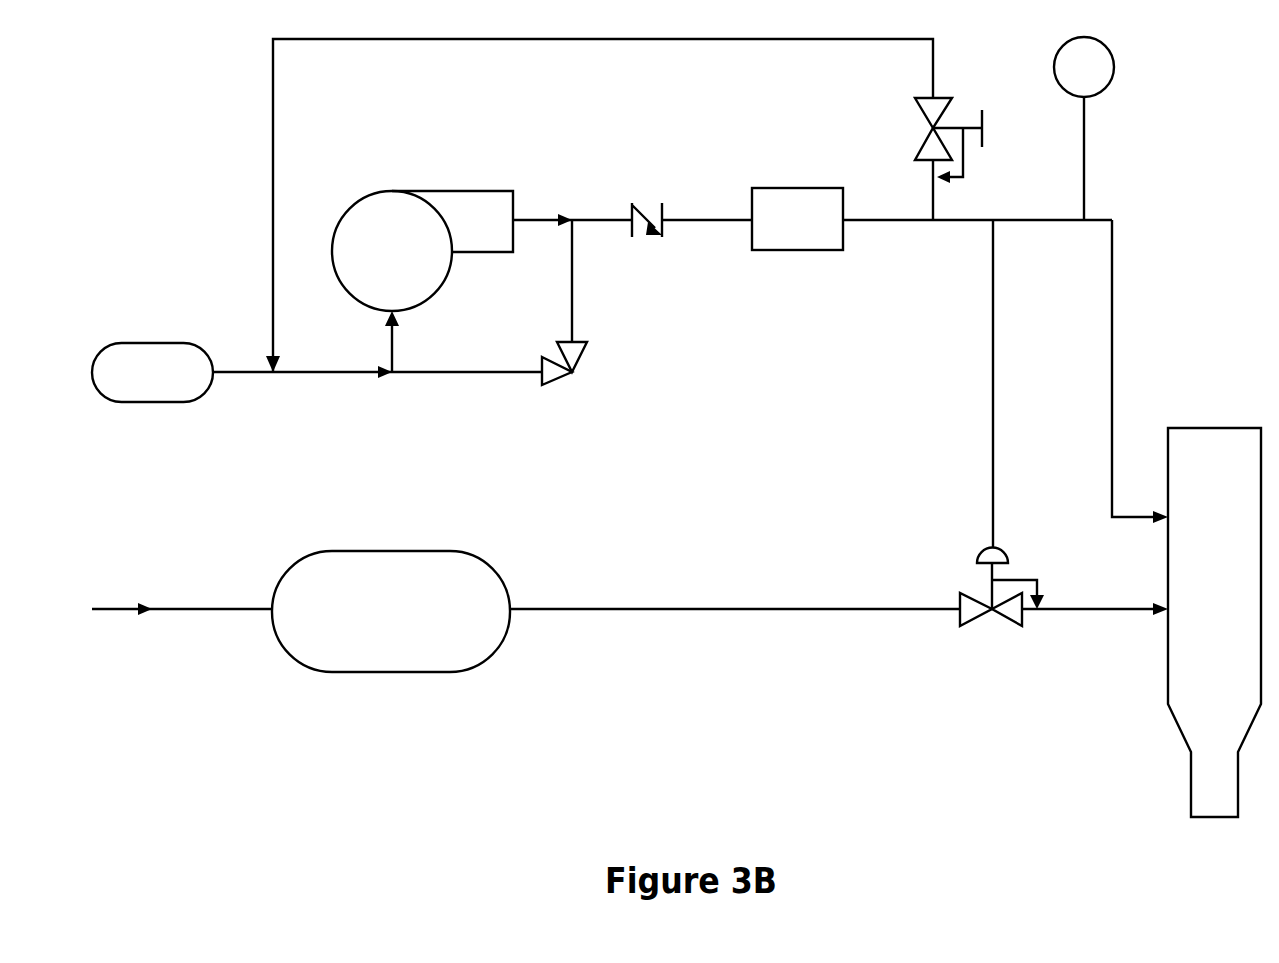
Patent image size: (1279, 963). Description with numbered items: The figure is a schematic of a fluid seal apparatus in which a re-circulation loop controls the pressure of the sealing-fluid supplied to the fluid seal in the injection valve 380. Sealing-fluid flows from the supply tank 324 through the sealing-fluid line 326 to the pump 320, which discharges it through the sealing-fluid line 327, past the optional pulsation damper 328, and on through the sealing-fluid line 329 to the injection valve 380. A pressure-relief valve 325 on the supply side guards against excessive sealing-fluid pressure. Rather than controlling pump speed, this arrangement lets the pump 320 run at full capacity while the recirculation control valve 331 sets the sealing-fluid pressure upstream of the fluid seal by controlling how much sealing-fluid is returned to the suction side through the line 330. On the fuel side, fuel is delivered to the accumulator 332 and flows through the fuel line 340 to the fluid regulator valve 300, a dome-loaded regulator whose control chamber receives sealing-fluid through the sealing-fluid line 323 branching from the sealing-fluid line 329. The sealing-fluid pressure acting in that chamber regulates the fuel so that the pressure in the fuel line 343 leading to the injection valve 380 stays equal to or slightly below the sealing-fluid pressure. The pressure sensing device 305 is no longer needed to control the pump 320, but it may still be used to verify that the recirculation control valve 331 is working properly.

The fluid regulator valve 300 is at (973, 595).
The pressure sensing device 305 is at (1084, 67).
The pump 320 is at (422, 251).
The sealing-fluid line 323 is at (992, 420).
The supply tank 324 is at (152, 372).
The pressure-relief valve 325 is at (548, 387).
The sealing-fluid line 326 is at (302, 372).
The sealing-fluid line 327 is at (693, 220).
The pulsation damper 328 is at (797, 219).
The sealing-fluid line 329 is at (1113, 271).
The line 330 is at (273, 160).
The recirculation control valve 331 is at (918, 100).
The accumulator 332 is at (391, 611).
The fuel line 340 is at (932, 607).
The fuel line 343 is at (1080, 610).
The injection valve 380 is at (1214, 622).